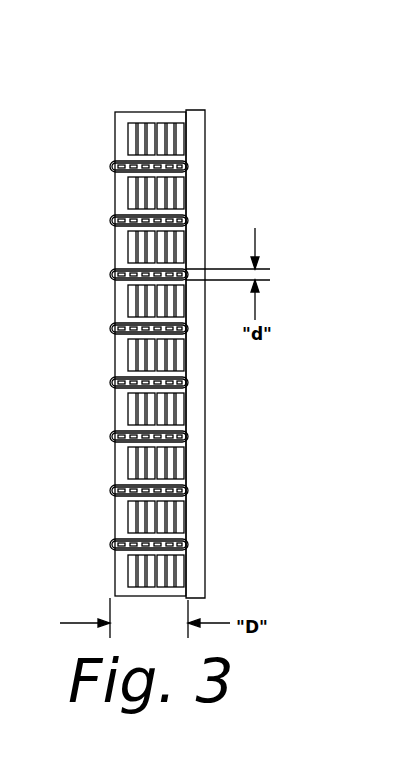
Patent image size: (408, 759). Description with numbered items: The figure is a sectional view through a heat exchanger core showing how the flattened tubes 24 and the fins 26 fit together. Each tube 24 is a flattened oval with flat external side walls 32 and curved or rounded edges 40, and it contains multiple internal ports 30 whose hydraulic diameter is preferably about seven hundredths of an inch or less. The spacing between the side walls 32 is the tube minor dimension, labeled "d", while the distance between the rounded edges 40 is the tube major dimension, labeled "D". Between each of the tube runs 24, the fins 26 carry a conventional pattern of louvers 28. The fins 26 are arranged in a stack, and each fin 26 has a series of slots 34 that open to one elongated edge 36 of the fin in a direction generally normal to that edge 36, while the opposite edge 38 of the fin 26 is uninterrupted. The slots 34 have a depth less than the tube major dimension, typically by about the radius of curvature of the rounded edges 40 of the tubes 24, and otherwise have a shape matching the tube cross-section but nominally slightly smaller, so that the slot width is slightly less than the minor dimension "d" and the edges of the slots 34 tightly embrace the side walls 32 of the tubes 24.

The tubes 24 is at (113, 163).
The fins 26 is at (205, 142).
The louvers 28 is at (141, 122).
The internal ports 30 is at (187, 163).
The flat external side walls 32 is at (128, 247).
The slots 34 is at (112, 441).
The elongated edge 36 is at (128, 411).
The opposite edge 38 is at (205, 412).
The rounded edges 40 is at (113, 383).